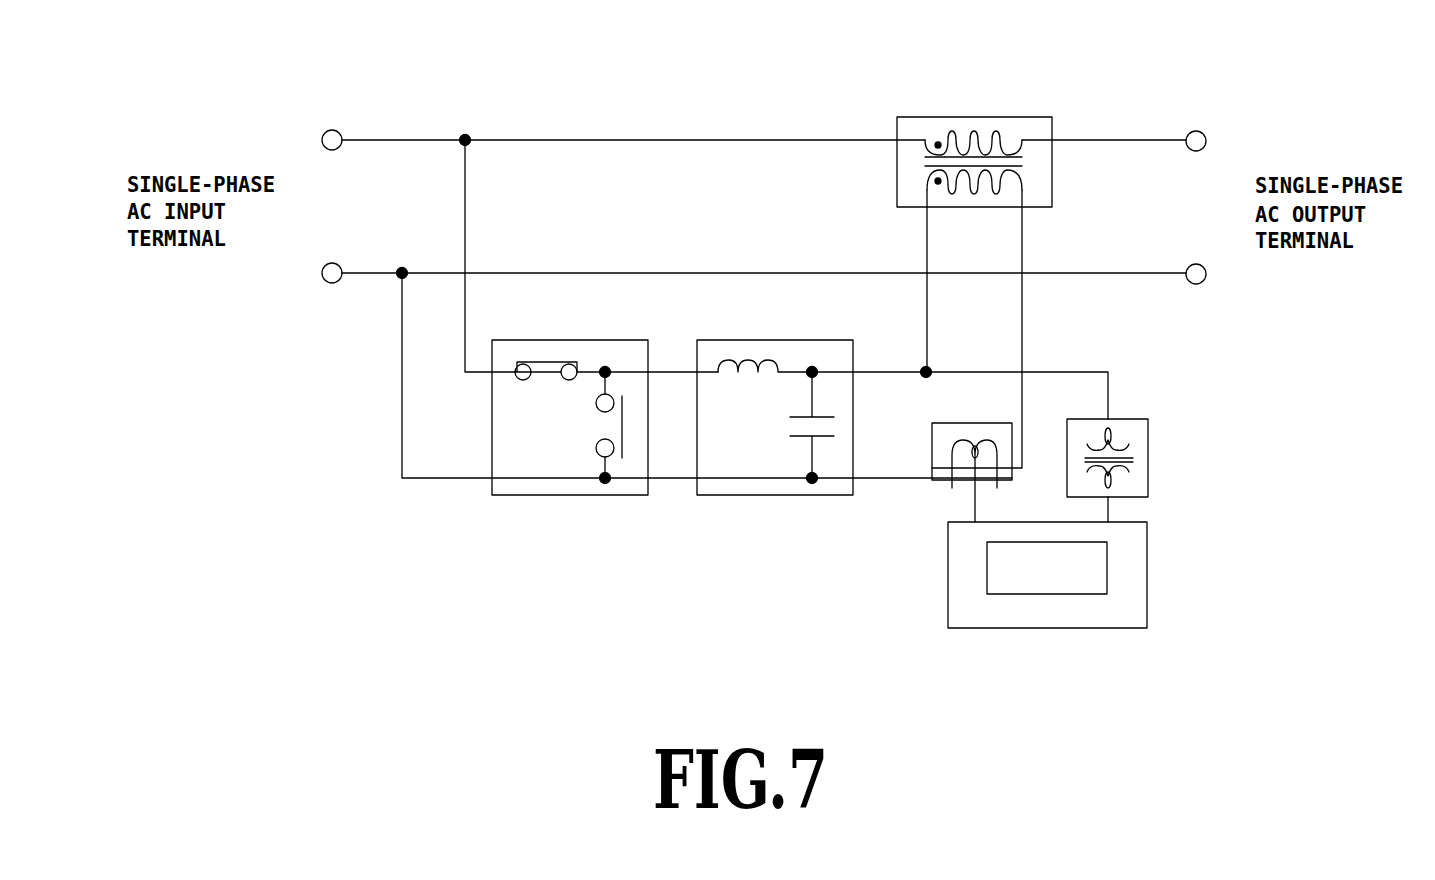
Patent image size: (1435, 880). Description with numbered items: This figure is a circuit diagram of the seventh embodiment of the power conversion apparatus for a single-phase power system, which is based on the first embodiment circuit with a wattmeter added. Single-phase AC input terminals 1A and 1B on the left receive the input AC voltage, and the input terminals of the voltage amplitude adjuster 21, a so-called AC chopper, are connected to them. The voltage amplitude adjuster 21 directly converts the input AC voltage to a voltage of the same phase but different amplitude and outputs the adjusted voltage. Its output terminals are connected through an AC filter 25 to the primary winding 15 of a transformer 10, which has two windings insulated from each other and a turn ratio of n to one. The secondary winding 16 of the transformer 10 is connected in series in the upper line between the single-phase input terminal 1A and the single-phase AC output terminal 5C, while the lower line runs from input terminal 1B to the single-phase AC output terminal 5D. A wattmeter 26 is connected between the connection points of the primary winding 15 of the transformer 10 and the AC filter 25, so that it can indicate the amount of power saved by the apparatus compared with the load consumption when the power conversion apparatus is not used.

The single-phase AC input terminal 1A is at (603, 250).
The single-phase AC input terminal 1B is at (734, 370).
The single-phase AC output terminal 5C is at (1134, 146).
The single-phase AC output terminal 5D is at (1216, 279).
The transformer 10 is at (1023, 247).
The primary winding 15 is at (1007, 202).
The secondary winding 16 is at (990, 122).
The voltage amplitude adjuster 21 is at (550, 495).
The AC filter 25 is at (777, 495).
The wattmeter 26 is at (1073, 628).